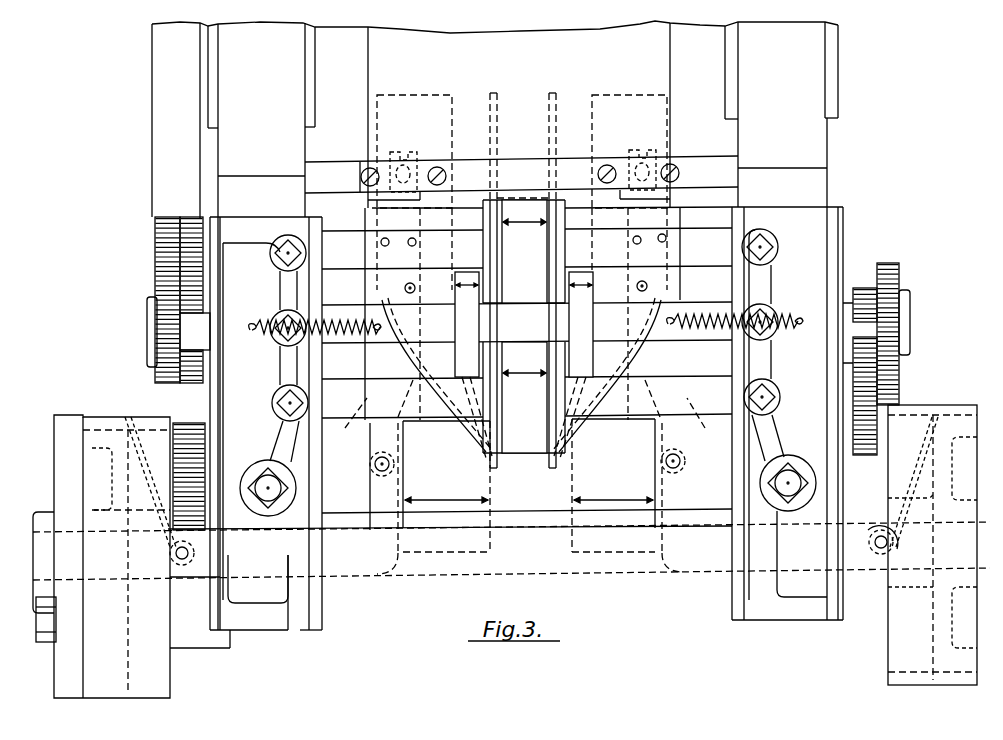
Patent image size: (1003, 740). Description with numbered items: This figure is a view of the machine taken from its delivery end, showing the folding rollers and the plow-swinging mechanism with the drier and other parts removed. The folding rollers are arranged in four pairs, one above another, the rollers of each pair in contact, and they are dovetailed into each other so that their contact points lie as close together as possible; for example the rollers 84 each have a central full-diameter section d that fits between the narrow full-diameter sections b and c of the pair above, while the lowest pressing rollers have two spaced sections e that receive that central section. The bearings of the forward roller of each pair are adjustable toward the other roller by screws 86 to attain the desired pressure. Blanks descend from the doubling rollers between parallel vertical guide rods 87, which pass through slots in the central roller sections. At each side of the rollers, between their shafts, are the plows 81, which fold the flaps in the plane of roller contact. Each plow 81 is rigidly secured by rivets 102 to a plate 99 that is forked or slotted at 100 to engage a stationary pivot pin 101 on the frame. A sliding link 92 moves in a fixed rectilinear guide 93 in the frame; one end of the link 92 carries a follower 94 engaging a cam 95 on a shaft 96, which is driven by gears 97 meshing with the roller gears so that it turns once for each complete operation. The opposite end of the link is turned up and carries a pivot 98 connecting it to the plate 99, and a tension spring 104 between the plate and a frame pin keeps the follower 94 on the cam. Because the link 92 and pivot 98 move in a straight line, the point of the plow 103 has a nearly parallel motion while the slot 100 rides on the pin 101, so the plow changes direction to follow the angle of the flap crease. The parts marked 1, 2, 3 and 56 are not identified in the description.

The head block 56 is at (522, 164).
The guide rods 87 is at (548, 104).
The slot 100 is at (398, 156).
The stationary pivot pin 101 is at (417, 166).
The screws 86 is at (276, 248).
The gears 97 is at (190, 423).
The rollers 84 is at (878, 396).
The tension spring 104 is at (274, 338).
The block 1 is at (524, 251).
The block 2 is at (524, 324).
The block 3 is at (524, 397).
The rivets 102 is at (409, 246).
The plows 81 is at (402, 354).
The point of the plow 103 is at (529, 485).
The pivot 98 is at (527, 451).
The plate 99 is at (523, 414).
The sliding link 92 is at (399, 562).
The shaft 96 is at (48, 530).
The guide 93 is at (268, 578).
The cam 95 is at (128, 420).
The follower 94 is at (174, 560).